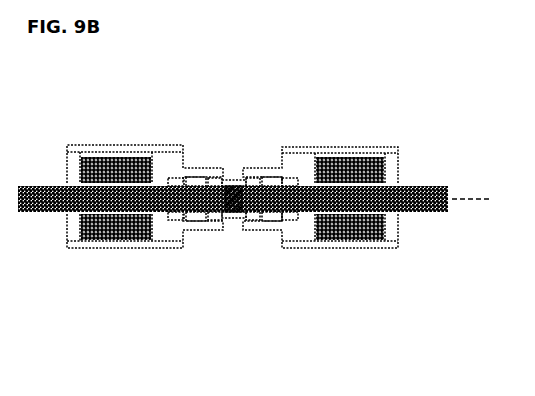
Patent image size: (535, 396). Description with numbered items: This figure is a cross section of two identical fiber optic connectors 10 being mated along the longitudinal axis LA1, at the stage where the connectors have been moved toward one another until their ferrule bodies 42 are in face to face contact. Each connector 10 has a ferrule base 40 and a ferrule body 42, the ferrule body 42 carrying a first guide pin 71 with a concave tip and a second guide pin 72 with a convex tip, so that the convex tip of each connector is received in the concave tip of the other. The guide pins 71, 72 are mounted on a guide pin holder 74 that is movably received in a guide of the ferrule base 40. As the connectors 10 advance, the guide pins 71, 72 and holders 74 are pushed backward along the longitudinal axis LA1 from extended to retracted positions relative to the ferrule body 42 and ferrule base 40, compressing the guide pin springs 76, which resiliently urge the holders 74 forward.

The fiber optic connector 10 is at (233, 217).
The ferrule base 40 is at (168, 152).
The ferrule body 42 is at (229, 176).
The first guide pin 71 is at (233, 181).
The second guide pin 72 is at (218, 181).
The guide pin holder 74 is at (264, 178).
The guide pin spring 76 is at (175, 182).
The longitudinal axis LA1 is at (463, 203).